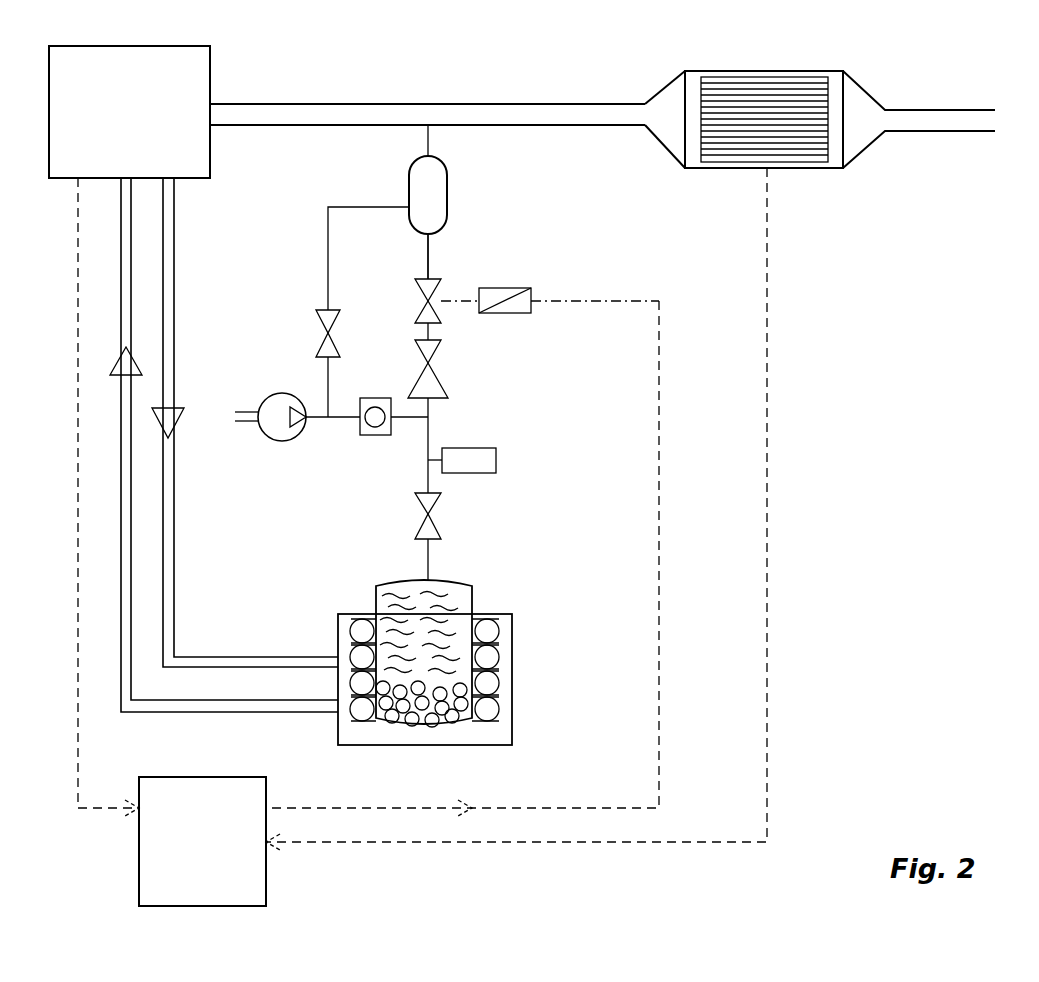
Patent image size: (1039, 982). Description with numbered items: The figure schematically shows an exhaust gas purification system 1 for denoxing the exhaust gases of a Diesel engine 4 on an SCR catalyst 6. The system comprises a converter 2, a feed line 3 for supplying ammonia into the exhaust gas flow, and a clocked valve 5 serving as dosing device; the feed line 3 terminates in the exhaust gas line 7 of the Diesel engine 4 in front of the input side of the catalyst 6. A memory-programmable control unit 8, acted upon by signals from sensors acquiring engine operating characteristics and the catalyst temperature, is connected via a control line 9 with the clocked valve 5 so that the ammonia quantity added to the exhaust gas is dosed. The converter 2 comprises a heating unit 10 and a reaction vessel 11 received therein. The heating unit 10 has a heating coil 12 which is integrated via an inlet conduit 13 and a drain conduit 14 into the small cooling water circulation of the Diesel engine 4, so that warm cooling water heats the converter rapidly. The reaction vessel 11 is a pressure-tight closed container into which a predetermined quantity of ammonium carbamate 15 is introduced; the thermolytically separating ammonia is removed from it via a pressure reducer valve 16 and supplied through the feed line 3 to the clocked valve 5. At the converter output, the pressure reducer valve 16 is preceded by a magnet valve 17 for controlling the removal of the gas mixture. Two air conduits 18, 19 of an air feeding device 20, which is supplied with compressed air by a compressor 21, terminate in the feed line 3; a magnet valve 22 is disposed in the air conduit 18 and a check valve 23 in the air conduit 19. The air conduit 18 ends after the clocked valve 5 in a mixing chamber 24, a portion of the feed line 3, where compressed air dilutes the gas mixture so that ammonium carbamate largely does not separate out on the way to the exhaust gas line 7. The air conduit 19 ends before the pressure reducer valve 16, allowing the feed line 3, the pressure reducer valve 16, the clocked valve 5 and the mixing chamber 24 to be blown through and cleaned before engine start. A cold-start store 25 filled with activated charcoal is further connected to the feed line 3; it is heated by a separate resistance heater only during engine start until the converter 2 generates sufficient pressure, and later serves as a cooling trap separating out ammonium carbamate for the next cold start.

The exhaust gas purification system 1 is at (940, 483).
The converter 2 is at (573, 600).
The feed line 3 is at (381, 408).
The Diesel engine 4 is at (118, 141).
The clocked valve 5 is at (443, 276).
The SCR catalyst 6 is at (859, 160).
The exhaust gas line 7 is at (602, 105).
The control unit 8 is at (190, 856).
The control line 9 is at (688, 652).
The heating unit 10 is at (512, 735).
The reaction vessel 11 is at (462, 608).
The heating coil 12 is at (473, 670).
The inlet conduit 13 is at (245, 422).
The drain conduit 14 is at (224, 445).
The ammonium carbamate 15 is at (398, 722).
The pressure reducer valve 16 is at (440, 363).
The magnet valve 17 is at (384, 517).
The air conduit 18 is at (326, 222).
The air conduit 19 is at (405, 415).
The air feeding device 20 is at (281, 287).
The compressor 21 is at (273, 443).
The magnet valve 22 is at (280, 363).
The check valve 23 is at (360, 436).
The mixing chamber 24 is at (402, 193).
The cold-start store 25 is at (498, 454).